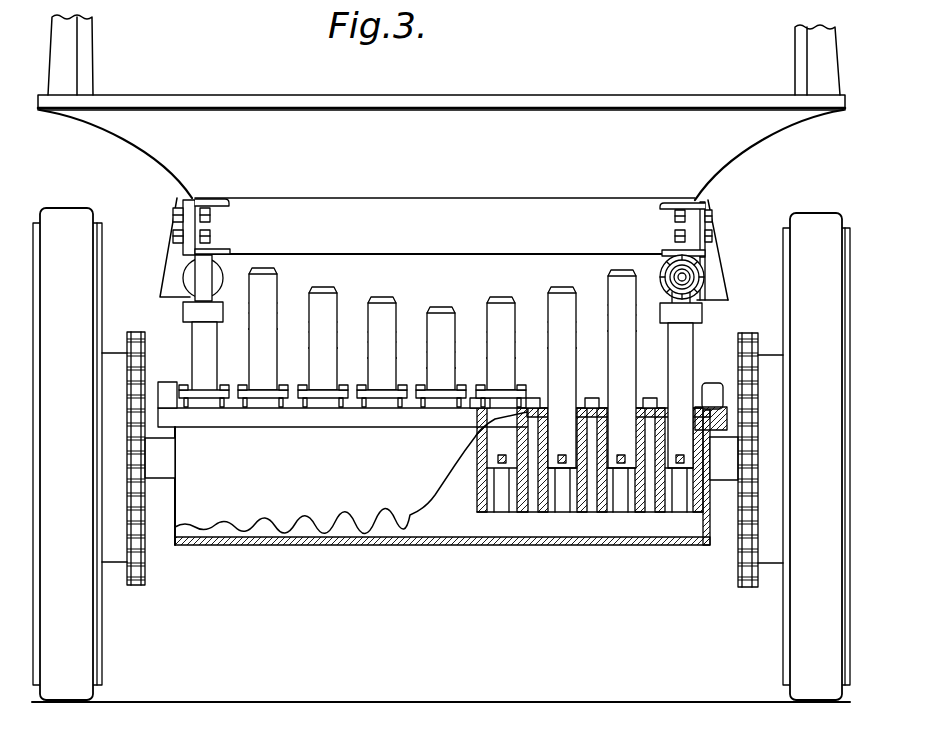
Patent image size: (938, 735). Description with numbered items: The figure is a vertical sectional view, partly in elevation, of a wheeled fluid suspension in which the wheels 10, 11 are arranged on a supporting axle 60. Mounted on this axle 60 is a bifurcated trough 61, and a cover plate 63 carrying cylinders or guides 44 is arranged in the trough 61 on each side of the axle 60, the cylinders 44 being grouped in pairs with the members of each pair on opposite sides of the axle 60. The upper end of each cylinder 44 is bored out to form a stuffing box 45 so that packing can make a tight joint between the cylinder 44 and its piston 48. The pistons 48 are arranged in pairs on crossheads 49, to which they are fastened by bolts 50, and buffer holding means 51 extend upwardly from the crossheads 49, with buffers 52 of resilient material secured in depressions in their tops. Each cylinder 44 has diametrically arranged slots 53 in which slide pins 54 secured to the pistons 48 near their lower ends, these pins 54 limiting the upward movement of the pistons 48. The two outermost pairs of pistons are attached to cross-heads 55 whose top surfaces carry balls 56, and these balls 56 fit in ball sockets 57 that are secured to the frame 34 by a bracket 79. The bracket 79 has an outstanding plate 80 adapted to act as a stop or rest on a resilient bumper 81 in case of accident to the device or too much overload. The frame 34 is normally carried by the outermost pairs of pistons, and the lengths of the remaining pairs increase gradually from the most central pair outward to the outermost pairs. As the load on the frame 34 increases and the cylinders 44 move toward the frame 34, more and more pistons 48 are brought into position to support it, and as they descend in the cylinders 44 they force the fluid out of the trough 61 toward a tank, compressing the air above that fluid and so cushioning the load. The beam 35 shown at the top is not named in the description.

The wheel 10 is at (68, 667).
The wheel 11 is at (808, 648).
The frame 34 is at (527, 203).
The cross beam 35 is at (297, 50).
The cylinder 44 is at (545, 500).
The stuffing box 45 is at (660, 432).
The piston 48 is at (200, 363).
The crosshead 49 is at (497, 350).
The bolt 50 is at (608, 305).
The buffer holding means 51 is at (328, 302).
The buffer 52 is at (265, 270).
The slot 53 is at (677, 440).
The pin 54 is at (633, 508).
The cross-head 55 is at (187, 313).
The ball 56 is at (685, 277).
The ball socket 57 is at (230, 250).
The supporting axle 60 is at (728, 470).
The bifurcated trough 61 is at (307, 543).
The cover plate 63 is at (725, 412).
The bracket 79 is at (710, 200).
The outstanding plate 80 is at (725, 295).
The resilient bumper 81 is at (707, 407).